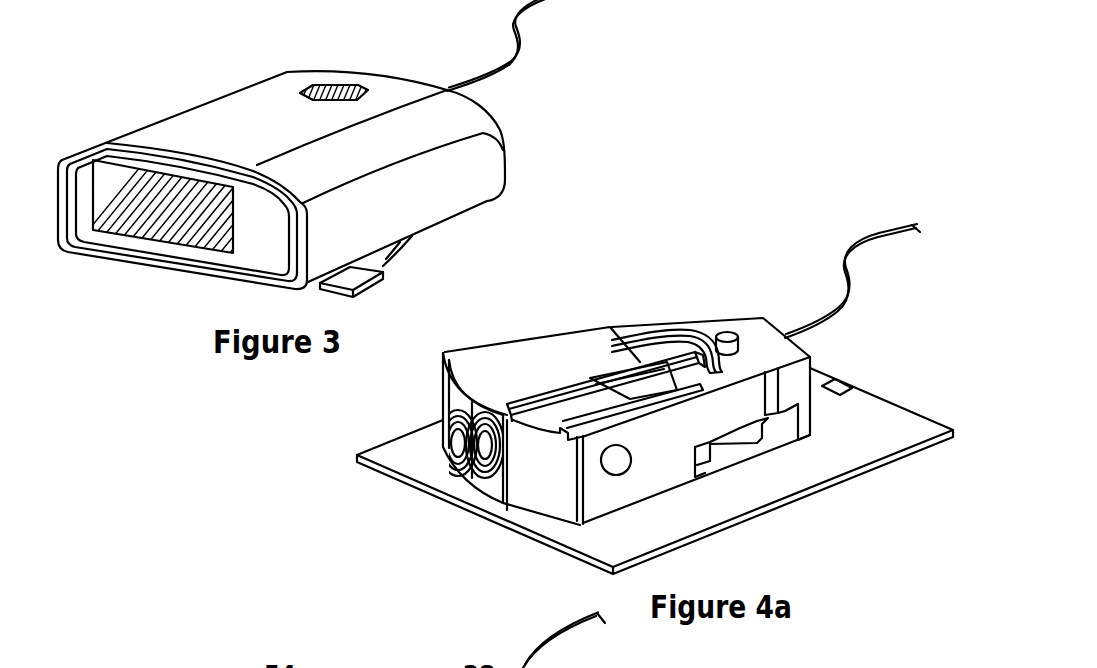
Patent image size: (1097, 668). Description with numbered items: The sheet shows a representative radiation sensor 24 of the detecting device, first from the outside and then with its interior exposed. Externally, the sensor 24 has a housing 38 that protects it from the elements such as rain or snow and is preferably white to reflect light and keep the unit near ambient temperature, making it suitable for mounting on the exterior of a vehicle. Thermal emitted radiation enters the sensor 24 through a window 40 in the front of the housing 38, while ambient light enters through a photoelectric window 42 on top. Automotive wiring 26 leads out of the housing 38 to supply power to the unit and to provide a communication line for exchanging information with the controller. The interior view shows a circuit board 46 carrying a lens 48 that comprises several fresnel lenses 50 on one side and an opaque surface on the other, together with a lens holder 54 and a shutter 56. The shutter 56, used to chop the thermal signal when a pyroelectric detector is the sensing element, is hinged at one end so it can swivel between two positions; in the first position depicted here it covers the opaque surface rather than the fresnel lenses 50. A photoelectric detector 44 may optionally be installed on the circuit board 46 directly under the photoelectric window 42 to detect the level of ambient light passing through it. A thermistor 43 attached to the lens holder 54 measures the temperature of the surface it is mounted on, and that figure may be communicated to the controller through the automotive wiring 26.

In FIG. 3, the sensor 24 is at (412, 62).
In FIG. 3, the automotive wiring 26 is at (522, 68).
In FIG. 4A, the automotive wiring 26 is at (840, 313).
In FIG. 3, the housing 38 is at (197, 115).
In FIG. 3, the window 40 is at (118, 220).
In FIG. 3, the photoelectric window 42 is at (318, 84).
In FIG. 4A, the thermistor 43 is at (632, 461).
In FIG. 4A, the photoelectric detector 44 is at (846, 382).
In FIG. 4A, the circuit board 46 is at (828, 465).
In FIG. 4A, the lens 48 is at (452, 389).
In FIG. 4A, the fresnel lenses 50 is at (443, 420).
In FIG. 4A, the lens holder 54 is at (537, 352).
In FIG. 4A, the shutter 56 is at (547, 499).